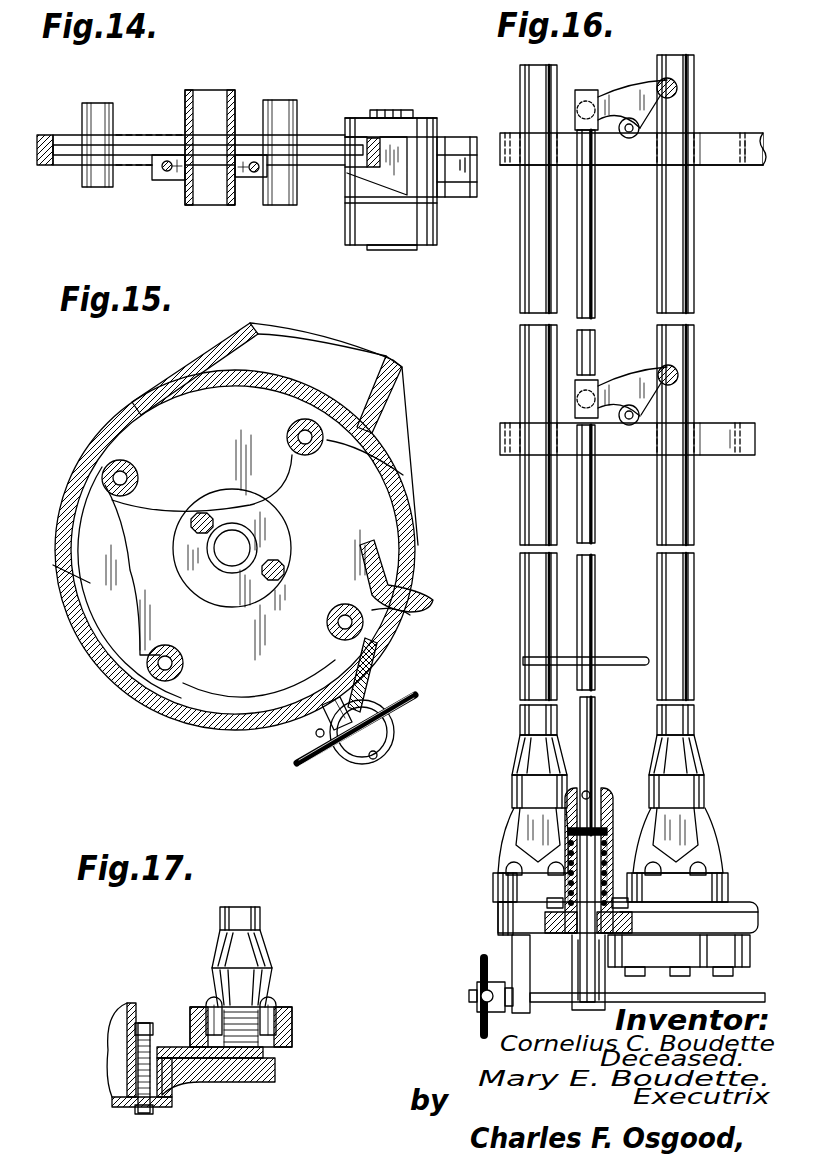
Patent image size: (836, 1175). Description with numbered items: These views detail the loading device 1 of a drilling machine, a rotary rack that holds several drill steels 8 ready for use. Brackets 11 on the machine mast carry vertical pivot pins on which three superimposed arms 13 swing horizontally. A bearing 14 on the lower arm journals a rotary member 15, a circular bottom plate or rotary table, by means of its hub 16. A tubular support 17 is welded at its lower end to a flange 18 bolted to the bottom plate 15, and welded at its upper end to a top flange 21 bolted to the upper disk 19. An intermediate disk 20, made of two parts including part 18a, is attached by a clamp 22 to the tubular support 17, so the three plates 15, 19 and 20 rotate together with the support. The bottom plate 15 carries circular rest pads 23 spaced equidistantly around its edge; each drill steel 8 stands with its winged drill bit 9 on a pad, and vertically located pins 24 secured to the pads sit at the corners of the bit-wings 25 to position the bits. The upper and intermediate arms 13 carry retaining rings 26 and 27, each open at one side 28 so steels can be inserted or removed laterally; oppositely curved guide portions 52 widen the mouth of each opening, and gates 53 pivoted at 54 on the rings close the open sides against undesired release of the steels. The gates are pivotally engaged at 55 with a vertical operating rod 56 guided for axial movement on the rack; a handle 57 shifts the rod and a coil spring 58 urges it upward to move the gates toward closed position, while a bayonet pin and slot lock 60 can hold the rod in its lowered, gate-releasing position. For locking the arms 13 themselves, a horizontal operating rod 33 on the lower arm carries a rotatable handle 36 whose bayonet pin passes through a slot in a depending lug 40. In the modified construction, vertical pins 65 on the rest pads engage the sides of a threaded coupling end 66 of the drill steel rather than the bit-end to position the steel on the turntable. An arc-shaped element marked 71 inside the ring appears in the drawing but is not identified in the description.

In FIG. 16, the loading device 1 is at (508, 759).
In FIG. 14, the drill steel 8 is at (82, 110).
In FIG. 15, the drill steel 8 is at (288, 437).
In FIG. 16, the drill steel 8 is at (535, 518).
In FIG. 17, the drill steel 8 is at (262, 908).
In FIG. 16, the winged drill bit 9 is at (500, 838).
In FIG. 14, the brackets 11 is at (437, 232).
In FIG. 14, the superimposed arms 13 is at (380, 118).
In FIG. 15, the superimposed arms 13 is at (392, 376).
In FIG. 16, the superimposed arms 13 is at (755, 150).
In FIG. 17, the superimposed arms 13 is at (244, 1072).
In FIG. 17, the bearing 14 is at (172, 1088).
In FIG. 16, the rotary member 15 is at (742, 905).
In FIG. 17, the rotary member 15 is at (262, 1052).
In FIG. 17, the hub 16 is at (144, 1110).
In FIG. 14, the tubular support 17 is at (185, 98).
In FIG. 15, the tubular support 17 is at (240, 540).
In FIG. 17, the tubular support 17 is at (130, 1002).
In FIG. 17, the flange 18 is at (160, 1040).
In FIG. 14, the part of intermediate disk 18a is at (358, 134).
In FIG. 15, the upper disk 19 is at (128, 632).
In FIG. 14, the intermediate disk 20 is at (120, 145).
In FIG. 15, the top flange 21 is at (280, 530).
In FIG. 14, the clamp 22 is at (178, 178).
In FIG. 16, the rest pads 23 is at (493, 892).
In FIG. 16, the pins 24 is at (506, 862).
In FIG. 16, the bit-wings 25 is at (528, 825).
In FIG. 15, the retaining ring 26 is at (200, 712).
In FIG. 16, the retaining ring 26 is at (504, 136).
In FIG. 14, the retaining ring 27 is at (40, 165).
In FIG. 16, the retaining ring 27 is at (506, 430).
In FIG. 15, the open side 28 is at (385, 630).
In FIG. 16, the horizontal operating rod 33 is at (672, 993).
In FIG. 16, the handle 36 is at (478, 1010).
In FIG. 16, the depending lug 40 is at (522, 985).
In FIG. 15, the curved guide portions 52 is at (410, 615).
In FIG. 16, the curved guide portions 52 is at (725, 133).
In FIG. 15, the gates 53 is at (380, 648).
In FIG. 16, the gates 53 is at (677, 88).
In FIG. 16, the gate pivot 54 is at (630, 140).
In FIG. 15, the pivotal engagement 55 is at (330, 718).
In FIG. 16, the pivotal engagement 55 is at (612, 96).
In FIG. 15, the vertical operating rod 56 is at (356, 748).
In FIG. 16, the vertical operating rod 56 is at (600, 305).
In FIG. 15, the handle 57 is at (316, 768).
In FIG. 16, the handle 57 is at (633, 667).
In FIG. 16, the coil spring 58 is at (612, 845).
In FIG. 16, the bayonet pin and slot type lock 60 is at (592, 792).
In FIG. 17, the vertical pins 65 is at (210, 997).
In FIG. 17, the threaded coupling end 66 is at (255, 985).
In FIG. 15, the guide arc 71 is at (80, 548).